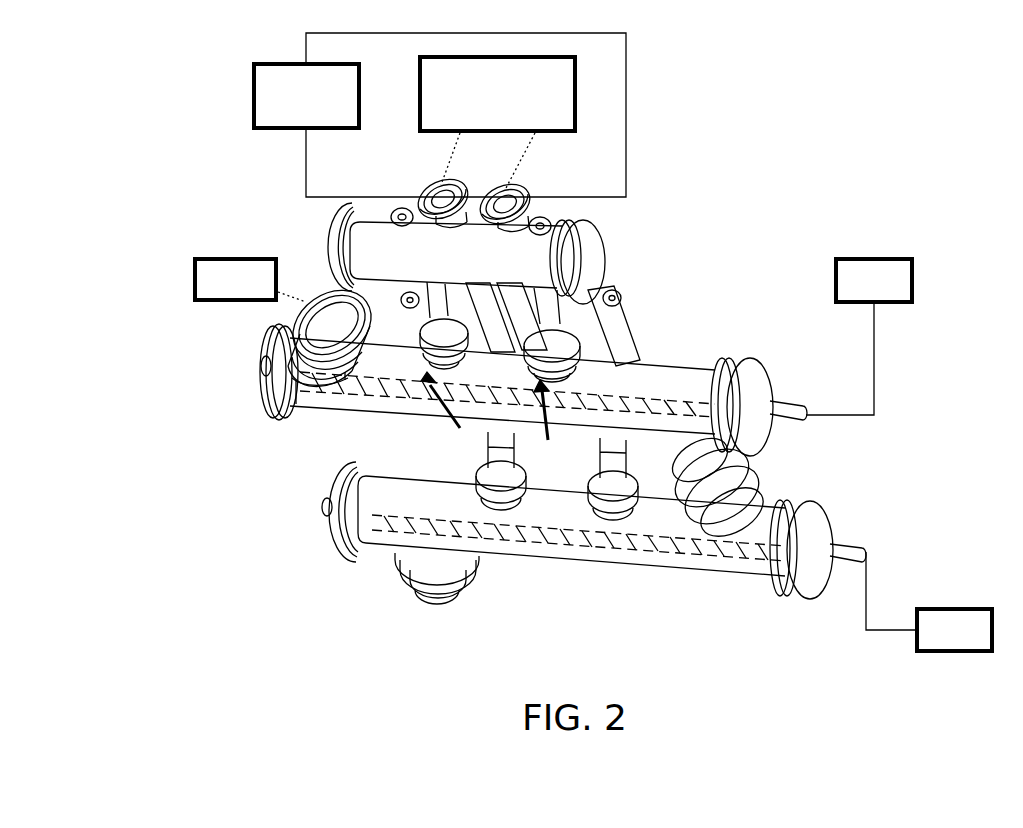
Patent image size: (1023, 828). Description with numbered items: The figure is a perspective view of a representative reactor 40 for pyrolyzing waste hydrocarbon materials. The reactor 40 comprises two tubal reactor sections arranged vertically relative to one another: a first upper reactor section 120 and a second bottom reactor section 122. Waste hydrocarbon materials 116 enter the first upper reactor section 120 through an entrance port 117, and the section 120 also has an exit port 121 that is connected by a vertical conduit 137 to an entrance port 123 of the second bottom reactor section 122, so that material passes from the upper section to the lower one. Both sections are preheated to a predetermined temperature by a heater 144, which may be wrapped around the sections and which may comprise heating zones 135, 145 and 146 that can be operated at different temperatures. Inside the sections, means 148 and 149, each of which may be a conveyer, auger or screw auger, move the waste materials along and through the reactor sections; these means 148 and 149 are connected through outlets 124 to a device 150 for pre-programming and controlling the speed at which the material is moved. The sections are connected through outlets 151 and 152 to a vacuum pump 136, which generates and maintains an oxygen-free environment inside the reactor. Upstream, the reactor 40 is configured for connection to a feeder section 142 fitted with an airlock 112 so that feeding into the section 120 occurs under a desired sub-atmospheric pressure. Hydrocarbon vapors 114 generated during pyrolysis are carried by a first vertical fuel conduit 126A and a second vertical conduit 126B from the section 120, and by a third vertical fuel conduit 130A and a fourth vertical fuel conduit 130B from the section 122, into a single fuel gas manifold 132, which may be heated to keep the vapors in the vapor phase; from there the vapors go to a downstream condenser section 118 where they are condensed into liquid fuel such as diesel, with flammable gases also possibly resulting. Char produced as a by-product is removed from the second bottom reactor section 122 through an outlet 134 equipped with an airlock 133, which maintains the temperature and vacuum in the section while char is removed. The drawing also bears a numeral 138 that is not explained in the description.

The reactor 40 is at (800, 140).
The vacuum pump 136 is at (306, 96).
The condenser section 118 is at (497, 122).
The feeder section 142 is at (250, 280).
The device for pre-programming and controlling speed 150 is at (899, 455).
The fuel gas manifold 132 is at (466, 253).
The hydrocarbon vapors 114 is at (471, 194).
The outlet 151 is at (434, 196).
The outlet 152 is at (514, 198).
The elbow fitting 138 is at (420, 338).
The first vertical fuel conduit 126A is at (432, 305).
The second vertical conduit 126B is at (541, 328).
The heater 144 is at (668, 600).
The first upper reactor section 120 is at (683, 402).
The means for moving waste hydrocarbon materials 148 is at (507, 395).
The outlets 124 is at (805, 405).
The heating zone 145 is at (440, 411).
The heating zone 146 is at (548, 419).
The airlock 112 is at (296, 322).
The waste hydrocarbon materials 116 is at (275, 336).
The entrance port 117 is at (333, 410).
The heating zone 135 is at (342, 395).
The second bottom reactor section 122 is at (378, 509).
The means for moving waste hydrocarbon materials 149 is at (578, 538).
The third vertical fuel conduit 130A is at (500, 458).
The fourth vertical fuel conduit 130B is at (610, 470).
The exit port 121 is at (688, 461).
The vertical conduit 137 is at (752, 478).
The entrance port 123 is at (768, 496).
The outlet 134 is at (476, 582).
The airlock 133 is at (440, 605).